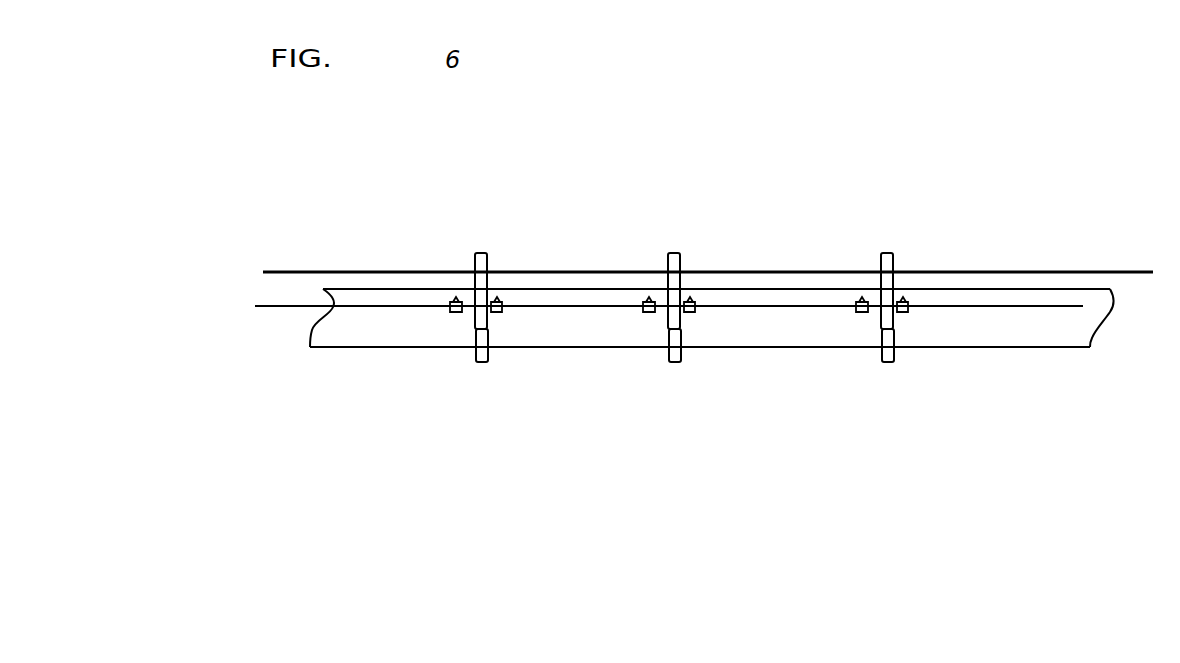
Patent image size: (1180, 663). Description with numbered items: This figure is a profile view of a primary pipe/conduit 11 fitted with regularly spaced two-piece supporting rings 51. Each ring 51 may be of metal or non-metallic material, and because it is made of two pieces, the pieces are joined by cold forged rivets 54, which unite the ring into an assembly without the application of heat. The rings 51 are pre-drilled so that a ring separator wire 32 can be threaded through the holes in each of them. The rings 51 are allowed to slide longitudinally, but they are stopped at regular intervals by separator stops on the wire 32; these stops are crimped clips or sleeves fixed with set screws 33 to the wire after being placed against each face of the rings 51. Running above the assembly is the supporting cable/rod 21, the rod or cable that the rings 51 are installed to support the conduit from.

The supporting cable/rod 21 is at (303, 262).
The two-piece supporting ring 51 is at (472, 256).
The supporting ring separator stops with set screws 33 is at (497, 272).
The ring separator wire 32 is at (268, 312).
The primary pipe/conduit 11 is at (1100, 337).
The cold forged rivet 54 is at (692, 353).